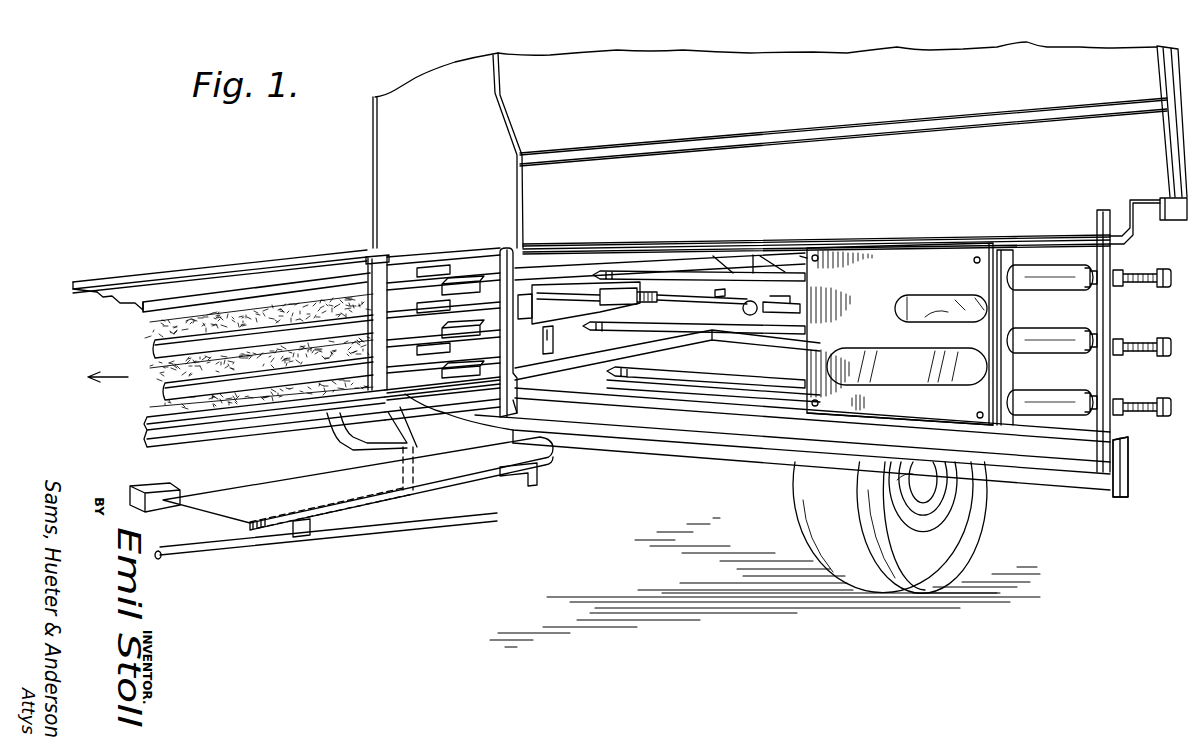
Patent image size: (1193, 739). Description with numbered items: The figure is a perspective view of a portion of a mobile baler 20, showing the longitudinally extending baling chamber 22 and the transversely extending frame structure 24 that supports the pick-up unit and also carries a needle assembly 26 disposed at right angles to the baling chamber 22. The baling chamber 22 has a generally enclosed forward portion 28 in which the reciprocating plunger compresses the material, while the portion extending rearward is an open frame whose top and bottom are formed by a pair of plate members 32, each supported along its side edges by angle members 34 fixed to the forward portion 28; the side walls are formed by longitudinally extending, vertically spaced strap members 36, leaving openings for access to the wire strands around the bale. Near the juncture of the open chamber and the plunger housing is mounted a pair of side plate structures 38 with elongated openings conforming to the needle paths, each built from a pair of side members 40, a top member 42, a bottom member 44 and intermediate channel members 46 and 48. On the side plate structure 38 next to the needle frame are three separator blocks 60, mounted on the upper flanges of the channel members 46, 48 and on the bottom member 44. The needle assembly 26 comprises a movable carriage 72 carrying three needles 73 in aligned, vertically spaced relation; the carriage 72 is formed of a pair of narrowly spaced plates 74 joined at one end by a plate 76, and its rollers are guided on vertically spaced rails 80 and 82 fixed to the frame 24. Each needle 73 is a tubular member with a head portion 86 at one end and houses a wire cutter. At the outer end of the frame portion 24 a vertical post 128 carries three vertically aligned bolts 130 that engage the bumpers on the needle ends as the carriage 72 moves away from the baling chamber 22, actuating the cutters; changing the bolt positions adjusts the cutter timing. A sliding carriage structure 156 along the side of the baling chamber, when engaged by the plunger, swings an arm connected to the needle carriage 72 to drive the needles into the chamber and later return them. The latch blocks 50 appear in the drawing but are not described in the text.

The mobile baler 20 is at (838, 197).
The baling chamber 22 is at (286, 343).
The transversely extending frame structure 24 is at (1130, 227).
The needle assembly 26 is at (878, 323).
The forward portion of the baling chamber 28 is at (643, 258).
The plate members 32 is at (270, 266).
The angle members 34 is at (146, 274).
The strap members 36 is at (155, 348).
The side plate structures 38 is at (500, 246).
The side members 40 is at (532, 252).
The top member 42 is at (470, 248).
The bottom member 44 is at (341, 498).
The intermediate channel member 46 is at (373, 346).
The intermediate channel member 48 is at (333, 467).
The latch blocks 50 is at (432, 264).
The separator blocks 60 is at (507, 396).
The movable carriage 72 is at (887, 244).
The needles 73 is at (697, 256).
The plates 74 is at (958, 415).
The plate 76 is at (1012, 306).
The rail 80 is at (803, 259).
The rail 82 is at (745, 405).
The head portion 86 is at (600, 262).
The vertical post 128 is at (1120, 428).
The bolts 130 is at (1142, 340).
The sliding carriage structure 156 is at (564, 305).